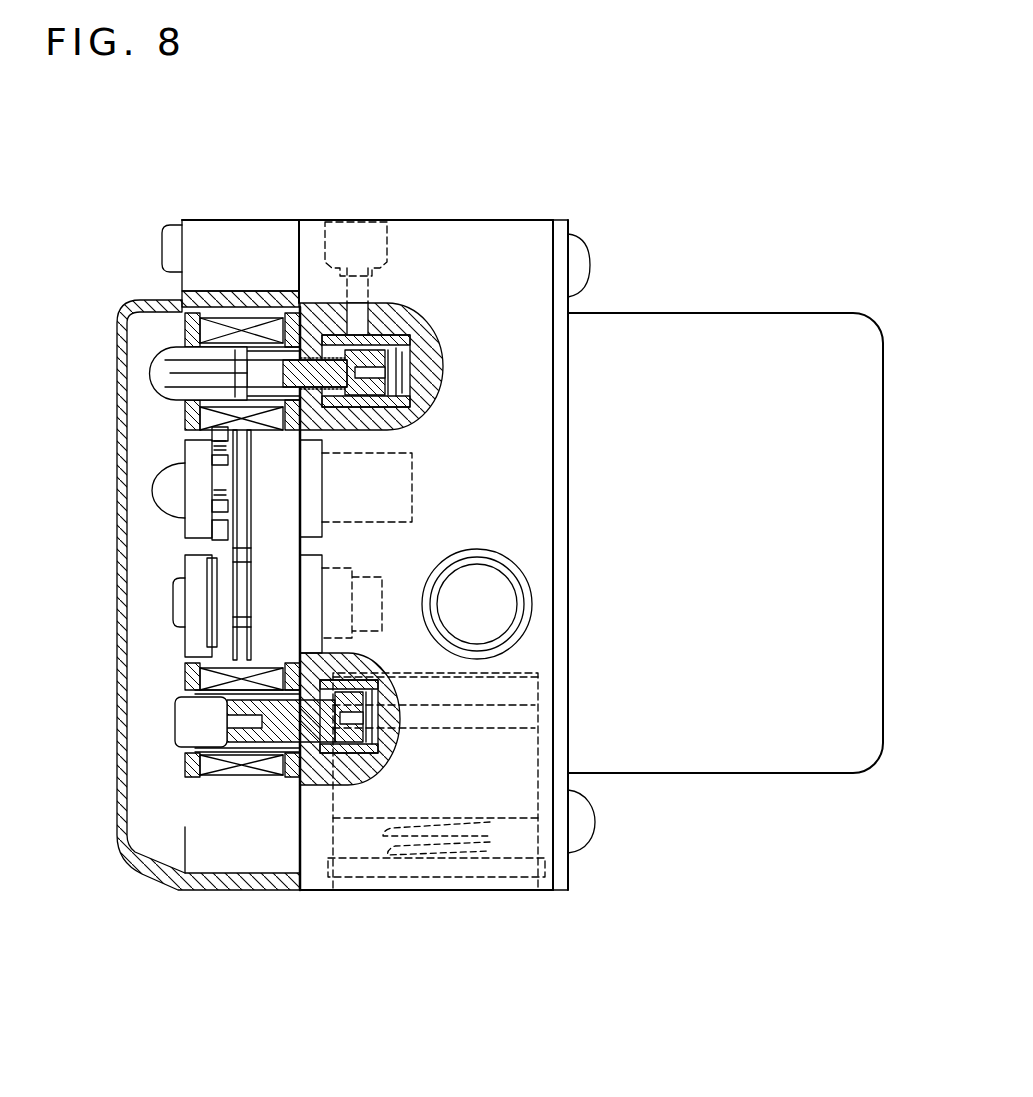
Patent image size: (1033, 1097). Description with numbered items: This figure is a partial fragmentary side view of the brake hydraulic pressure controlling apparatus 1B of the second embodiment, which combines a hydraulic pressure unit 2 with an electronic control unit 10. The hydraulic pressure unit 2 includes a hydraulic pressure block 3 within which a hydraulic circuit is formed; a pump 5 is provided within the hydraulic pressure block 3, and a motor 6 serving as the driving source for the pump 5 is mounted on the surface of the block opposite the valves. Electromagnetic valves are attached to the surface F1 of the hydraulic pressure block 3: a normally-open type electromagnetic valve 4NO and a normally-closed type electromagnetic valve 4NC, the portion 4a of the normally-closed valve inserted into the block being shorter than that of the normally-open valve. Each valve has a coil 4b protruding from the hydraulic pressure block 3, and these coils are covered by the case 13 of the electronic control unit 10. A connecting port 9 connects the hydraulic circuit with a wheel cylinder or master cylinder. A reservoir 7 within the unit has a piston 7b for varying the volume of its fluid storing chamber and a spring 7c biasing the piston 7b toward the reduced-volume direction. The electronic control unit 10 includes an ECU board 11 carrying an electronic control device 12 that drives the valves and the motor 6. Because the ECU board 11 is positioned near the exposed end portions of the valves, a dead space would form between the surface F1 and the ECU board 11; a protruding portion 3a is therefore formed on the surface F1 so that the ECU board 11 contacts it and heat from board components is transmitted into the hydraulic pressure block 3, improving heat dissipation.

The brake hydraulic pressure controlling apparatus 1B is at (400, 205).
The hydraulic pressure unit 2 is at (511, 220).
The hydraulic pressure block 3 is at (553, 264).
The protruding portion 3a is at (197, 637).
The portion inserted into the hydraulic pressure block 4a is at (333, 787).
The coil 4b is at (183, 296).
The normally-open type electromagnetic valve 4NO is at (183, 373).
The normally-closed type electromagnetic valve 4NC is at (267, 587).
The pump 5 is at (495, 612).
The motor 6 is at (760, 750).
The reservoir 7 is at (387, 890).
The piston 7b is at (550, 797).
The spring 7c is at (447, 890).
The connecting port 9 is at (343, 240).
The electronic control unit 10 is at (245, 892).
The ECU board 11 is at (235, 543).
The electronic control device 12 is at (207, 492).
The case 13 is at (150, 880).
The surface of the hydraulic pressure block F1 is at (295, 249).